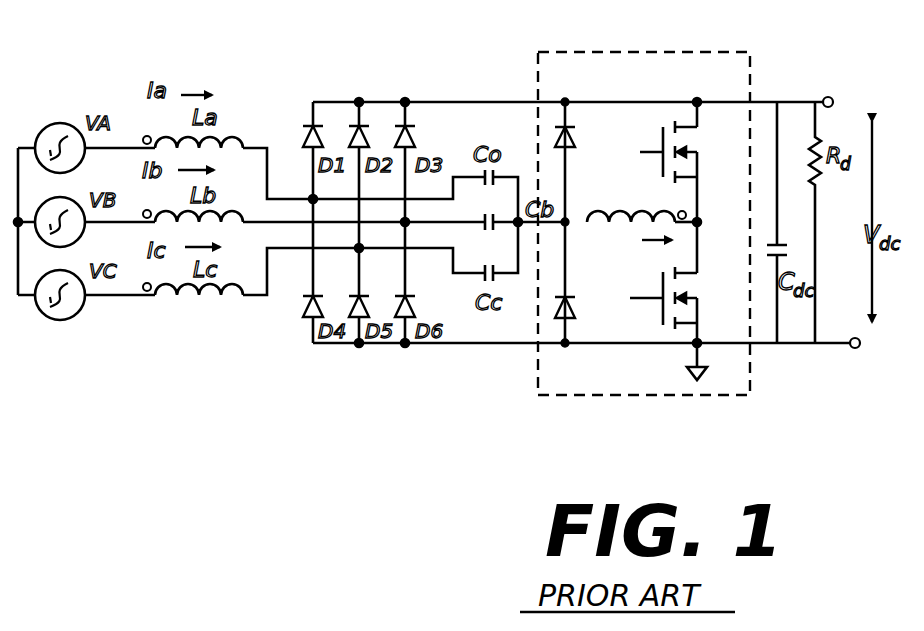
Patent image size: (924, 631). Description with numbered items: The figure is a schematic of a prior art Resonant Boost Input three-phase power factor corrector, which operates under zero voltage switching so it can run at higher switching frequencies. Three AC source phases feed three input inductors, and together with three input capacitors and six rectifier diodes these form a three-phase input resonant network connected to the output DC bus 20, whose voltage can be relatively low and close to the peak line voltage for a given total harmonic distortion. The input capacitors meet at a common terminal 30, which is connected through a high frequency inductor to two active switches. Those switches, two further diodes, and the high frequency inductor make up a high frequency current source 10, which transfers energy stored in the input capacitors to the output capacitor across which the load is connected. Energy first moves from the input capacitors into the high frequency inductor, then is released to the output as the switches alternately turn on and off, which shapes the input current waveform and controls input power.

The high frequency current source 10 is at (643, 52).
The output DC bus 20 is at (444, 96).
The common terminal of the input capacitors 30 is at (567, 220).